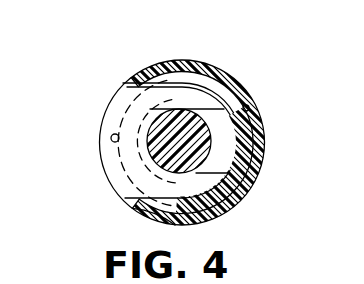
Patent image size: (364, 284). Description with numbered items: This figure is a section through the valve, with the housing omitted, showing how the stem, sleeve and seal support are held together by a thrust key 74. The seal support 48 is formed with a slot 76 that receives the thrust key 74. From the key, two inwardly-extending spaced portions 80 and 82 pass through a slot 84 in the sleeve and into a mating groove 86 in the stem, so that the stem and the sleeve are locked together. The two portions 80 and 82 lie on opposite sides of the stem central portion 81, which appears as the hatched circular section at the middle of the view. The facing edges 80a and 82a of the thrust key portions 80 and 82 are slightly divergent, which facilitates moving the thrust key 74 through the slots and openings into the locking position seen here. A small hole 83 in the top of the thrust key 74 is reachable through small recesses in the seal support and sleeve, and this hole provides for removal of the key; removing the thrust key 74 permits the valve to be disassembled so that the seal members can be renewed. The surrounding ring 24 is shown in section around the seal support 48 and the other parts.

The outer hatched ring 24 is at (168, 75).
The seal support 48 is at (233, 86).
The thrust key 74 is at (97, 147).
The slot 76 is at (122, 92).
The inwardly-extending spaced portion 80 is at (198, 100).
The facing edge 80a is at (249, 107).
The stem central portion 81 is at (155, 150).
The inwardly-extending spaced portion 82 is at (222, 206).
The facing edge 82a is at (233, 171).
The small hole 83 is at (110, 137).
The slot 84 is at (142, 213).
The mating groove 86 is at (232, 141).